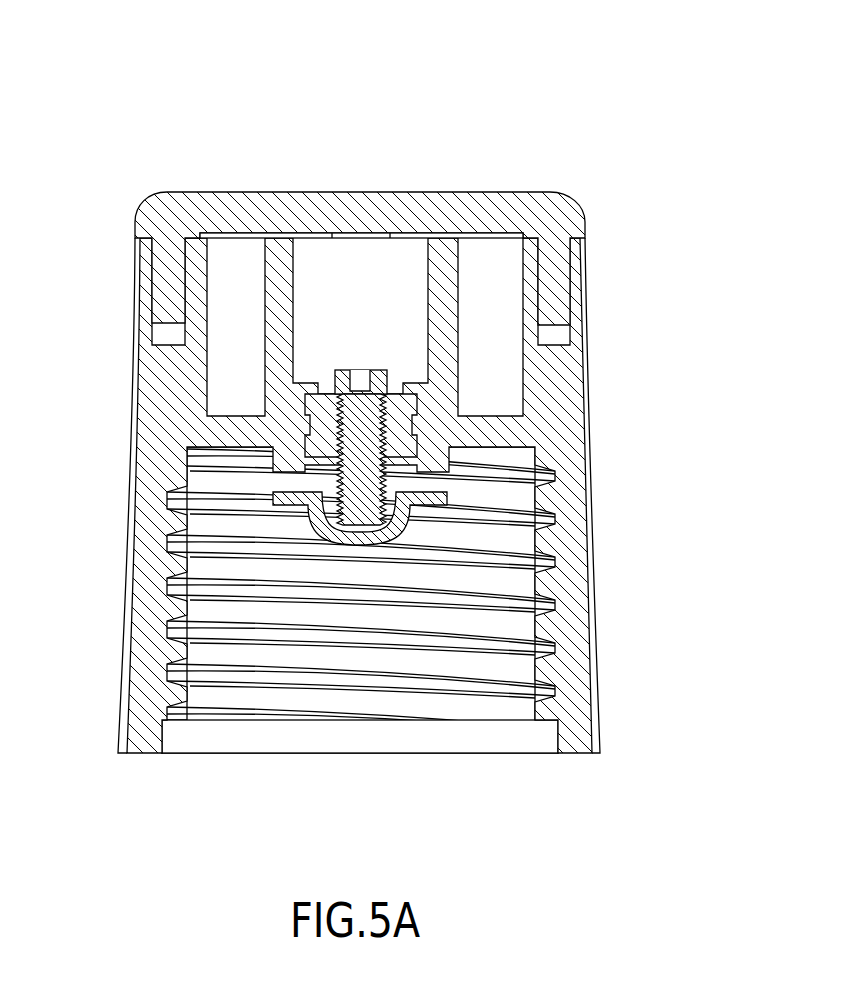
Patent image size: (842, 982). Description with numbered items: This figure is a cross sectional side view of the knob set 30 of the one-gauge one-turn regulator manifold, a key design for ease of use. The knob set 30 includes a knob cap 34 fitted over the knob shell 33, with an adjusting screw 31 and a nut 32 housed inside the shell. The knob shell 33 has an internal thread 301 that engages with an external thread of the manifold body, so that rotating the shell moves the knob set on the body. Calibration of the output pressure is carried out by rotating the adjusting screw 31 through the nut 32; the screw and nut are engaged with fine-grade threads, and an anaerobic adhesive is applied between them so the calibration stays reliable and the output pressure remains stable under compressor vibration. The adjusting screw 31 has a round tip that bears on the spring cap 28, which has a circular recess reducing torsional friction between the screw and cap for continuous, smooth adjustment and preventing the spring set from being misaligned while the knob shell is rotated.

The knob set 30 is at (351, 400).
The knob cap 34 is at (172, 222).
The knob shell 33 is at (158, 420).
The internal thread 301 is at (178, 580).
The adjusting screw 31 is at (361, 420).
The nut 32 is at (401, 432).
The spring cap 28 is at (430, 500).